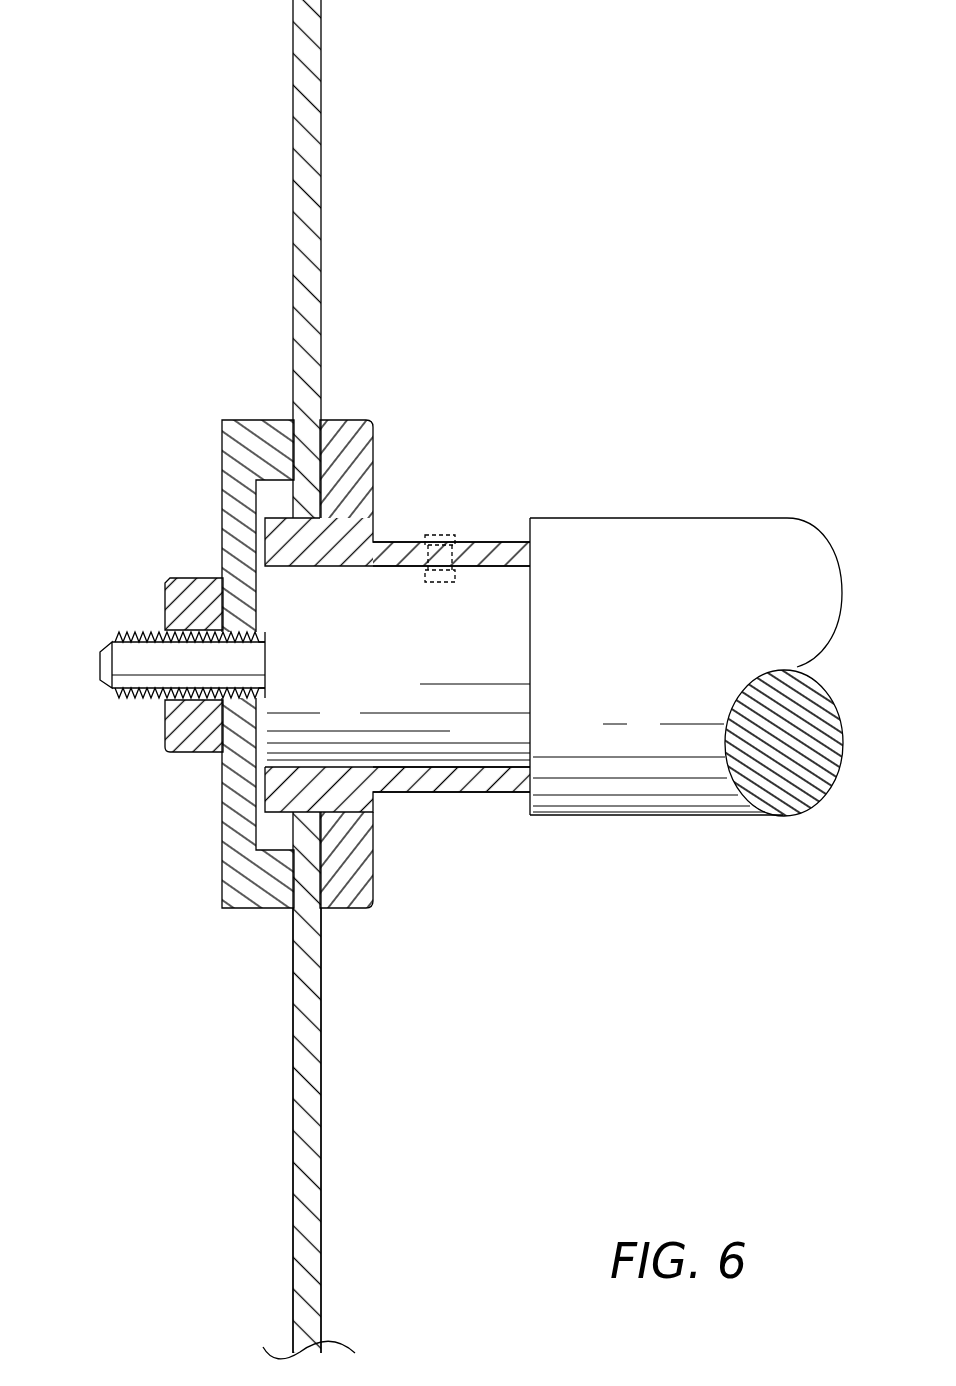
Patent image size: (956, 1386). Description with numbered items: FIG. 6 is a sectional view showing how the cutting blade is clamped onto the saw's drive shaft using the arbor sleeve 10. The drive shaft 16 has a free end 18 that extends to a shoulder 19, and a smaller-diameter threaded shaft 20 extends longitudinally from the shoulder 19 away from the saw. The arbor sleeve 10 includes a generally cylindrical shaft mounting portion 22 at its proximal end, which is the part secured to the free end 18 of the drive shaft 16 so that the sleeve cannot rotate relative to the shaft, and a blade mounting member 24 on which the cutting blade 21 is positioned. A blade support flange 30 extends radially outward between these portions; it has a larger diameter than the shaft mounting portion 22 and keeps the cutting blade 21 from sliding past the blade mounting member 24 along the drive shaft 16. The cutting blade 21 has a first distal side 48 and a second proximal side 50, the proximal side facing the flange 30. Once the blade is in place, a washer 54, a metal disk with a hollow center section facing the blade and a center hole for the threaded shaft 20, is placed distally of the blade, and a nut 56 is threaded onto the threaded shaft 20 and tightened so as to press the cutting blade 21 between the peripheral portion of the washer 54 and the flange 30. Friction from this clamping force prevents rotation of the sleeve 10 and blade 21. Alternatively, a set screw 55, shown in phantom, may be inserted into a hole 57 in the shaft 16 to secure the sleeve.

The arbor sleeve 10 is at (341, 690).
The drive shaft 16 is at (670, 658).
The free end 18 is at (171, 662).
The shoulder 19 is at (528, 803).
The threaded shaft 20 is at (128, 630).
The cutting blade 21 is at (323, 679).
The shaft mounting portion 22 is at (432, 780).
The blade mounting member 24 is at (278, 793).
The blade support flange 30 is at (357, 903).
The first distal side 48 is at (293, 1030).
The second proximal side 50 is at (322, 1145).
The washer 54 is at (260, 420).
The set screw 55 is at (443, 533).
The nut 56 is at (197, 578).
The hole 57 is at (425, 575).